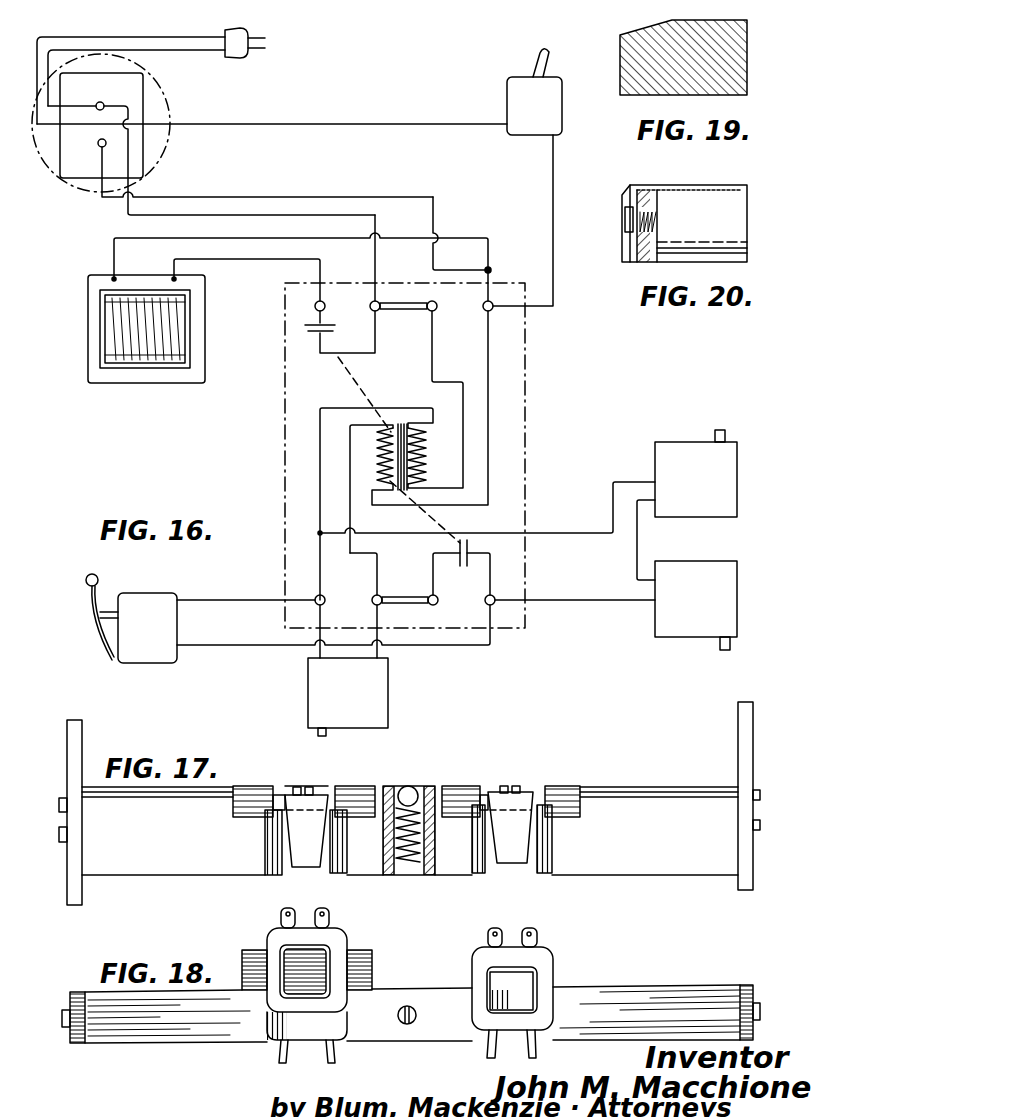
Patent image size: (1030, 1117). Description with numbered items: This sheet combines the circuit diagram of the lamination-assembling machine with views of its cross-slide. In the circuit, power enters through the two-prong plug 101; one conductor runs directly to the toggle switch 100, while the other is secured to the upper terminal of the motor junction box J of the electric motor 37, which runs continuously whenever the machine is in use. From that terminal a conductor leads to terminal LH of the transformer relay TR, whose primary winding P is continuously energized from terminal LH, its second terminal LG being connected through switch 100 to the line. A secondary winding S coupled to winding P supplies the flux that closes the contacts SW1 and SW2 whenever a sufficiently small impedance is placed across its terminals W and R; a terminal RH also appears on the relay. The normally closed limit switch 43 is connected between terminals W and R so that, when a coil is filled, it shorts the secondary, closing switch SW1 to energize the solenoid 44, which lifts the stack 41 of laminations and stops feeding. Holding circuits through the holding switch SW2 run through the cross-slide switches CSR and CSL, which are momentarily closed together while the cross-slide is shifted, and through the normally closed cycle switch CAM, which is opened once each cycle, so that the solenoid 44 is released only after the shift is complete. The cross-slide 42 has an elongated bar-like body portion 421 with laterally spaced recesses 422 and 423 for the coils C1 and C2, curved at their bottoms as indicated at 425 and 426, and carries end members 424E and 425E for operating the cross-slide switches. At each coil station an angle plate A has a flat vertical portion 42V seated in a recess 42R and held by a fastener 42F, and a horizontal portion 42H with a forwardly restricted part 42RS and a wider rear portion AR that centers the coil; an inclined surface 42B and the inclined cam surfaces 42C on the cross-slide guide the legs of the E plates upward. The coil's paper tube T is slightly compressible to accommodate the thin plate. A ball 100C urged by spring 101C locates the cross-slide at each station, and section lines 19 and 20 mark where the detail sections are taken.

In FIG. 16, the two-prong plug 101 is at (252, 52).
In FIG. 16, the electric motor 37 is at (165, 100).
In FIG. 16, the motor junction box J is at (147, 157).
In FIG. 16, the toggle switch 100 is at (548, 100).
In FIG. 16, the solenoid 44 is at (88, 333).
In FIG. 16, the solenoid switch SW1 is at (308, 340).
In FIG. 16, the terminal LH is at (405, 311).
In FIG. 16, the terminal LG is at (478, 309).
In FIG. 16, the transformer relay TR is at (440, 455).
In FIG. 16, the secondary winding S is at (374, 456).
In FIG. 16, the primary winding P is at (429, 456).
In FIG. 16, the holding switch SW2 is at (452, 550).
In FIG. 16, the secondary terminal W is at (308, 591).
In FIG. 16, the secondary terminal R is at (368, 597).
In FIG. 16, the terminal RH is at (410, 589).
In FIG. 16, the cycle switch CAM is at (288, 616).
In FIG. 16, the limit switch 43 is at (400, 697).
In FIG. 16, the cross-slide switch CSR is at (755, 428).
In FIG. 16, the cross-slide switch CSL is at (742, 627).
In FIG. 19, the cross-slide 42 is at (687, 56).
In FIG. 17, the cross-slide 42 is at (177, 880).
In FIG. 18, the cross-slide 42 is at (215, 1047).
In FIG. 19, the body portion 421 is at (722, 70).
In FIG. 17, the body portion 421 is at (656, 807).
In FIG. 18, the body portion 421 is at (660, 987).
In FIG. 19, the inclined cam surfaces 42C is at (607, 24).
In FIG. 17, the inclined cam surfaces 42C is at (592, 806).
In FIG. 20, the inclined surface portion 42B is at (641, 188).
In FIG. 20, the horizontally disposed portion 42H is at (704, 187).
In FIG. 17, the horizontally disposed portion 42H is at (409, 829).
In FIG. 20, the angle plate member A is at (729, 186).
In FIG. 17, the angle plate member A is at (299, 868).
In FIG. 20, the fastener 42F is at (626, 218).
In FIG. 17, the fastener 42F is at (526, 781).
In FIG. 20, the recess 42R is at (628, 248).
In FIG. 17, the recess 42R is at (494, 782).
In FIG. 20, the flat vertical portion 42V is at (626, 262).
In FIG. 17, the flat vertical portion 42V is at (316, 787).
In FIG. 20, the recess 423 is at (724, 218).
In FIG. 17, the recess 423 is at (518, 856).
In FIG. 18, the recess 423 is at (545, 1035).
In FIG. 17, the end member 424E is at (67, 755).
In FIG. 18, the end member 424E is at (75, 1046).
In FIG. 17, the end member 425E is at (738, 730).
In FIG. 18, the end member 425E is at (748, 986).
In FIG. 17, the rear portion AR is at (292, 800).
In FIG. 17, the recess 422 is at (266, 855).
In FIG. 18, the recess 422 is at (266, 1032).
In FIG. 17, the forwardly restricted portion 42RS is at (312, 860).
In FIG. 17, the ball 100C is at (408, 785).
In FIG. 17, the spring 101C is at (414, 860).
In FIG. 17, the section line 20— 20 is at (508, 820).
In FIG. 17, the section line 19— 19 is at (563, 800).
In FIG. 18, the curved portion 425 is at (316, 1047).
In FIG. 18, the coil C1 is at (328, 960).
In FIG. 18, the paper tube T is at (330, 962).
In FIG. 18, the stack 41 is at (360, 972).
In FIG. 18, the coil C2 is at (538, 975).
In FIG. 18, the curved portion 426 is at (473, 1030).